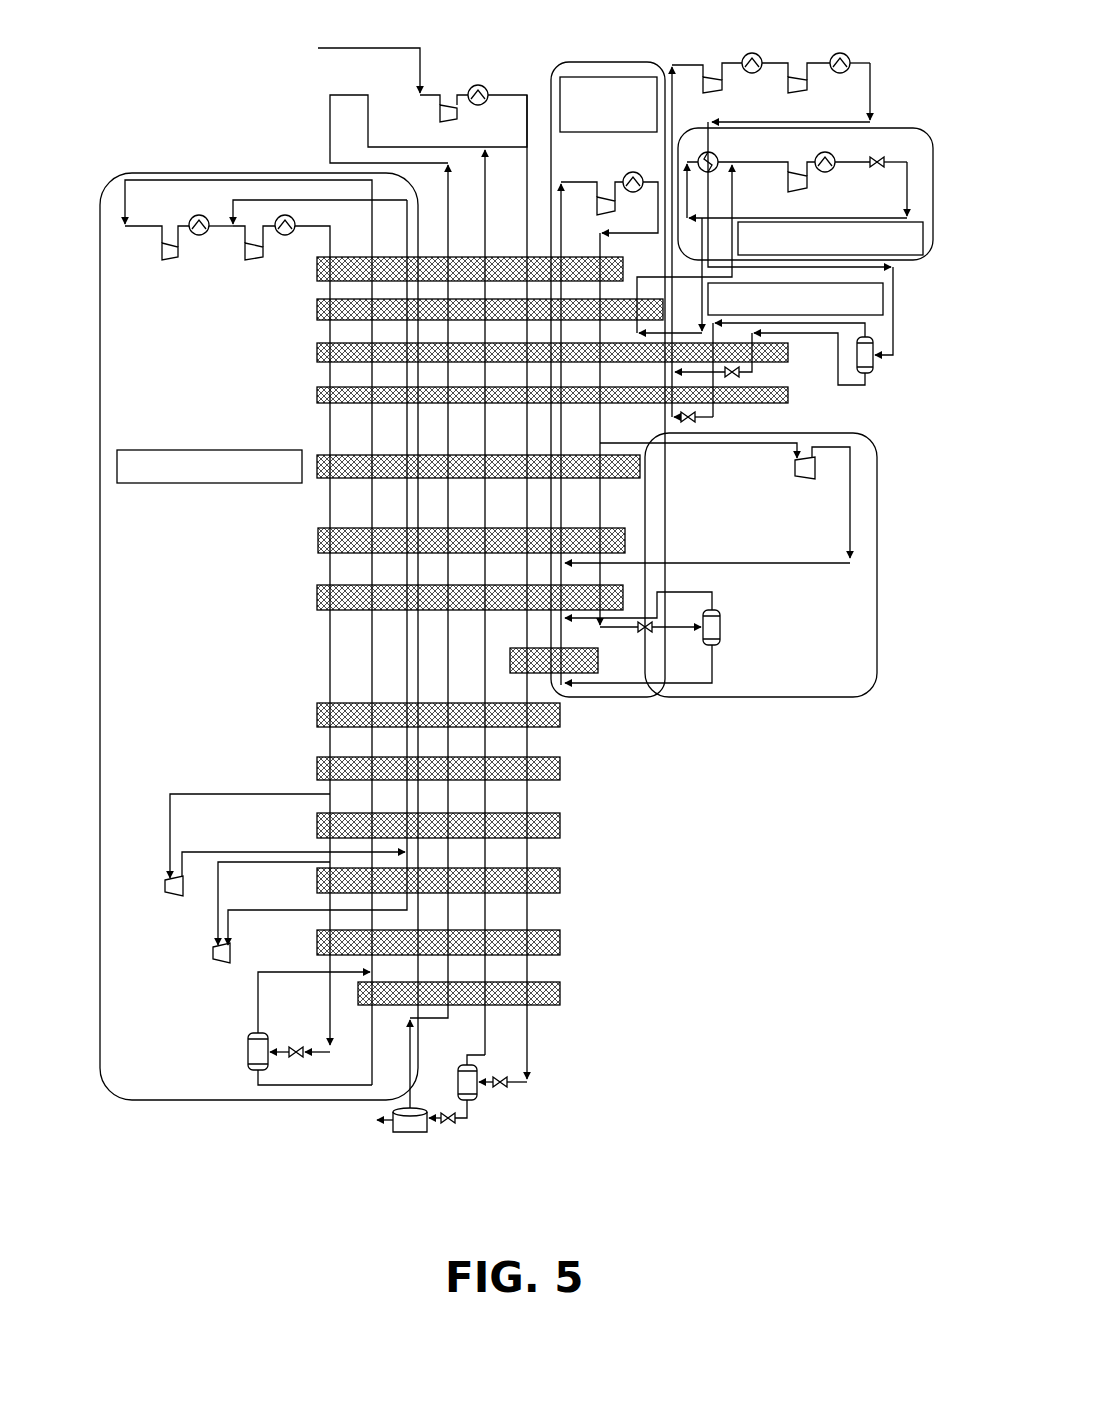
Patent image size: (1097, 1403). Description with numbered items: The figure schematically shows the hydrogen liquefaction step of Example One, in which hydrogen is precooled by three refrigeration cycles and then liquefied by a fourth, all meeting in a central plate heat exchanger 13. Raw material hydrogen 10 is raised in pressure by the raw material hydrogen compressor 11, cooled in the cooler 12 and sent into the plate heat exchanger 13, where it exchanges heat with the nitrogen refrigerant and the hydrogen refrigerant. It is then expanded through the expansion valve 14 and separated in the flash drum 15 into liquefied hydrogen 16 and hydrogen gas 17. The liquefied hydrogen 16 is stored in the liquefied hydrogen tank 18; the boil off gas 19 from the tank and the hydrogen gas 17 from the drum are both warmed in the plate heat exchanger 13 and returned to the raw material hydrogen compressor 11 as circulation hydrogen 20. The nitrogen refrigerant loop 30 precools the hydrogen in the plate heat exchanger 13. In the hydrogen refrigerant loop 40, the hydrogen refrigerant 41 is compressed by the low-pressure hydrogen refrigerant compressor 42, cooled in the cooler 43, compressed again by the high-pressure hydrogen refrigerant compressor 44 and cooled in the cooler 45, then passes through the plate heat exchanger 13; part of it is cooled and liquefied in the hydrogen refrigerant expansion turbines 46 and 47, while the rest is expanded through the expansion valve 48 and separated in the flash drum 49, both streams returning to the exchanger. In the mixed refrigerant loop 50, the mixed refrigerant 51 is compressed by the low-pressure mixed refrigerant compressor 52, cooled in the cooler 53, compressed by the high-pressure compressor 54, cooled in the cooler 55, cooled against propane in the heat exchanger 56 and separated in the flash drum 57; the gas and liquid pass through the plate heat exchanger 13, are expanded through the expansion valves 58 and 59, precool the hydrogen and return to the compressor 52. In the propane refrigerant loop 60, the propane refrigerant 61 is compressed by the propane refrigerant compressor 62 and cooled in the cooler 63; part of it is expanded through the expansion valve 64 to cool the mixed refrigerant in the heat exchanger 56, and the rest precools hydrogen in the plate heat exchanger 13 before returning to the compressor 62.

The raw material hydrogen 10 is at (241, 57).
The raw material hydrogen compressor 11 is at (449, 104).
The cooler 12 is at (482, 86).
The plate heat exchanger 13 is at (562, 770).
The expansion valve 14 is at (508, 1083).
The flash drum 15 is at (458, 1064).
The liquefied hydrogen 16 is at (456, 1121).
The hydrogen gas 17 is at (492, 607).
The liquefied hydrogen tank 18 is at (411, 1107).
The boil off gas 19 is at (415, 636).
The circulation hydrogen 20 is at (392, 95).
The nitrogen refrigerant loop 30 is at (605, 54).
The hydrogen refrigerant loop 40 is at (150, 160).
The hydrogen refrigerant 41 is at (140, 228).
The low-pressure hydrogen refrigerant compressor 42 is at (172, 243).
The cooler 43 is at (201, 214).
The high-pressure hydrogen refrigerant compressor 44 is at (257, 243).
The cooler 45 is at (287, 214).
The hydrogen refrigerant expansion turbine 46 is at (165, 886).
The hydrogen refrigerant expansion turbine 47 is at (231, 953).
The expansion valve 48 is at (297, 1047).
The flash drum 49 is at (249, 1035).
The mixed refrigerant loop 50 is at (935, 320).
The mixed refrigerant 51 is at (688, 65).
The low-pressure mixed refrigerant compressor 52 is at (712, 77).
The cooler 53 is at (753, 52).
The high-pressure mixed refrigerant compressor 54 is at (797, 77).
The cooler 55 is at (840, 52).
The heat exchanger 56 is at (712, 153).
The flash drum 57 is at (874, 362).
The expansion valve 58 is at (735, 375).
The expansion valve 59 is at (692, 421).
The propane refrigerant loop 60 is at (930, 119).
The propane refrigerant 61 is at (755, 162).
The propane refrigerant compressor 62 is at (807, 182).
The cooler 63 is at (830, 153).
The expansion valve 64 is at (880, 157).